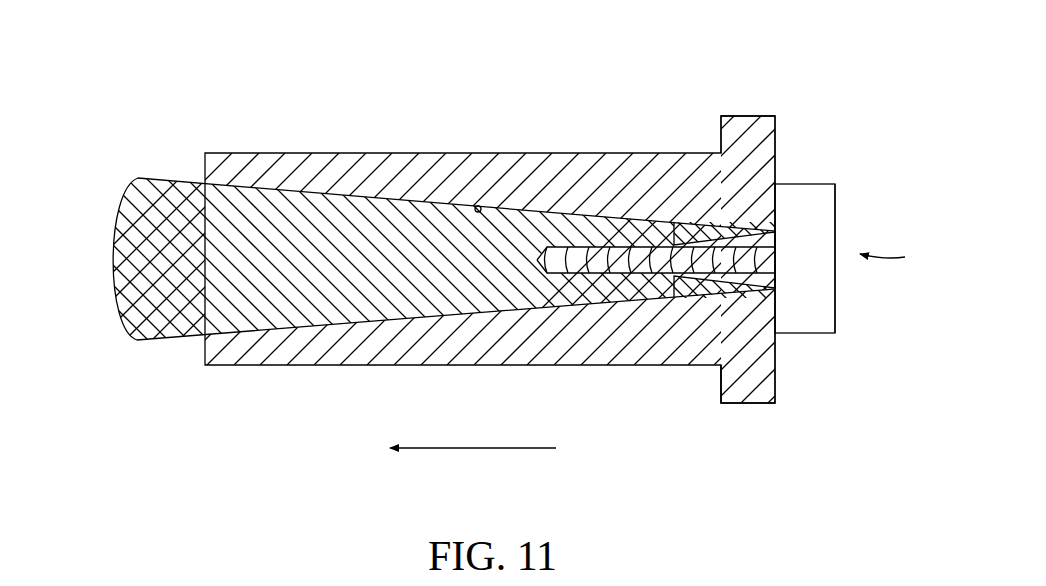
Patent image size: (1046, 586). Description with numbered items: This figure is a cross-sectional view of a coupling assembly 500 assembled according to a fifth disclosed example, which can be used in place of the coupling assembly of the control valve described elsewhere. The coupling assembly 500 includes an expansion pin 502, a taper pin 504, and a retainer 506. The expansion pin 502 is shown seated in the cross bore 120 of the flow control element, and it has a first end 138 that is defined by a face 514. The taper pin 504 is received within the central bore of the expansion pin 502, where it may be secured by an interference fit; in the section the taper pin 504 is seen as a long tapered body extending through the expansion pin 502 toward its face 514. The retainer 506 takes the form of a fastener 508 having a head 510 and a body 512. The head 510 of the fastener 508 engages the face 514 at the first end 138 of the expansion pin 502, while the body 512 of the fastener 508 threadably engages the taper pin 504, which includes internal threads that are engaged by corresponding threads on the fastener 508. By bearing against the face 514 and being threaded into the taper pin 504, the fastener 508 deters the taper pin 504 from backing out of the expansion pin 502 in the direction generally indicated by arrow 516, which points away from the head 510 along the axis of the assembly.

The coupling assembly 500 is at (172, 64).
The expansion pin 502 is at (262, 161).
The taper pin 504 is at (140, 301).
The retainer 506 is at (908, 261).
The fastener 508 is at (815, 203).
The head 510 is at (837, 302).
The body 512 is at (600, 253).
The face 514 is at (777, 142).
The arrow 516 is at (468, 450).
The cross bore 120 is at (476, 207).
The first end 138 is at (720, 383).